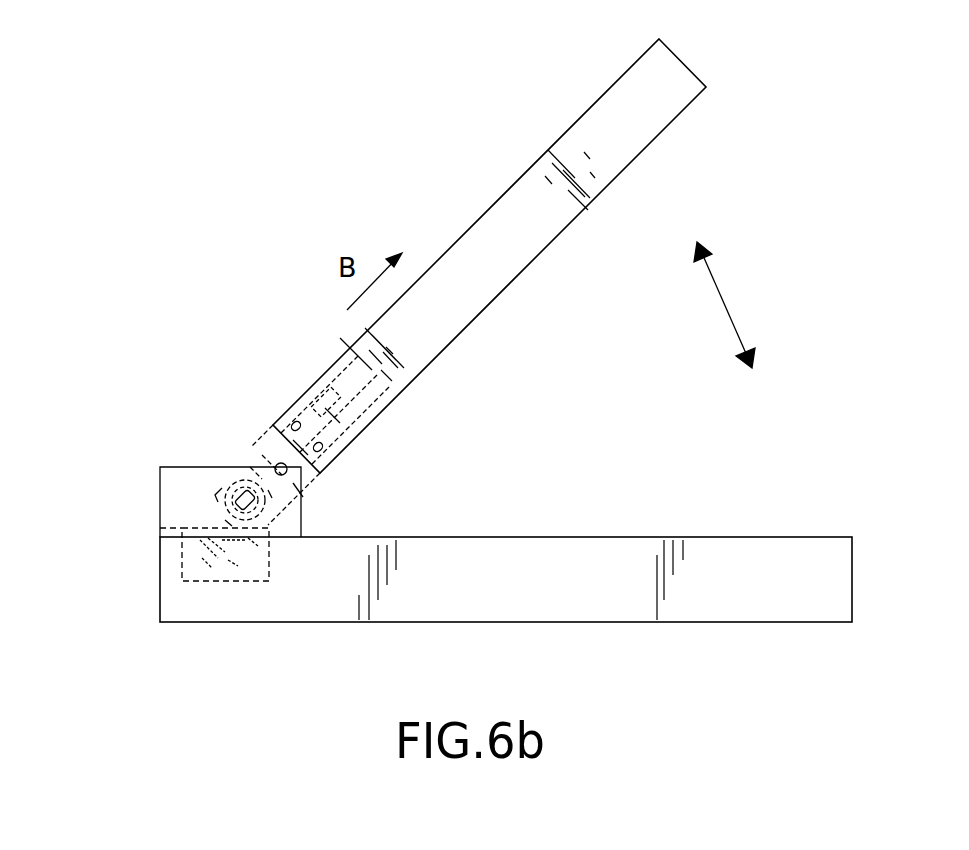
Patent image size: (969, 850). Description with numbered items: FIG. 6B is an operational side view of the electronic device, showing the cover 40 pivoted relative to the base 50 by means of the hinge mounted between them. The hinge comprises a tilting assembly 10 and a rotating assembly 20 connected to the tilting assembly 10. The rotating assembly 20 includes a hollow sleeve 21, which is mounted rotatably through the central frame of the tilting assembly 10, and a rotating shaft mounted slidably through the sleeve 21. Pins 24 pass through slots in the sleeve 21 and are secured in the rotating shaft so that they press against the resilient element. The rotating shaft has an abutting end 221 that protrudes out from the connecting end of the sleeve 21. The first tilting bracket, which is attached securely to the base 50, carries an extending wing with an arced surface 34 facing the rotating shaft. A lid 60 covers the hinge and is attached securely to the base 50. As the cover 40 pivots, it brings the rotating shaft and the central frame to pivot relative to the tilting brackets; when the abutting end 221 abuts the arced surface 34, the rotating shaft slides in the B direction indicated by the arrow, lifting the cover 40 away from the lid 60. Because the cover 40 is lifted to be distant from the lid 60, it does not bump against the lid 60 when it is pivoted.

The tilting assembly 10 is at (212, 475).
The rotating assembly 20 is at (325, 480).
The sleeve 21 is at (267, 458).
The pins 24 is at (310, 502).
The arced surface 34 is at (235, 562).
The cover 40 is at (583, 145).
The base 50 is at (723, 592).
The lid 60 is at (178, 480).
The abutting end 221 is at (190, 557).